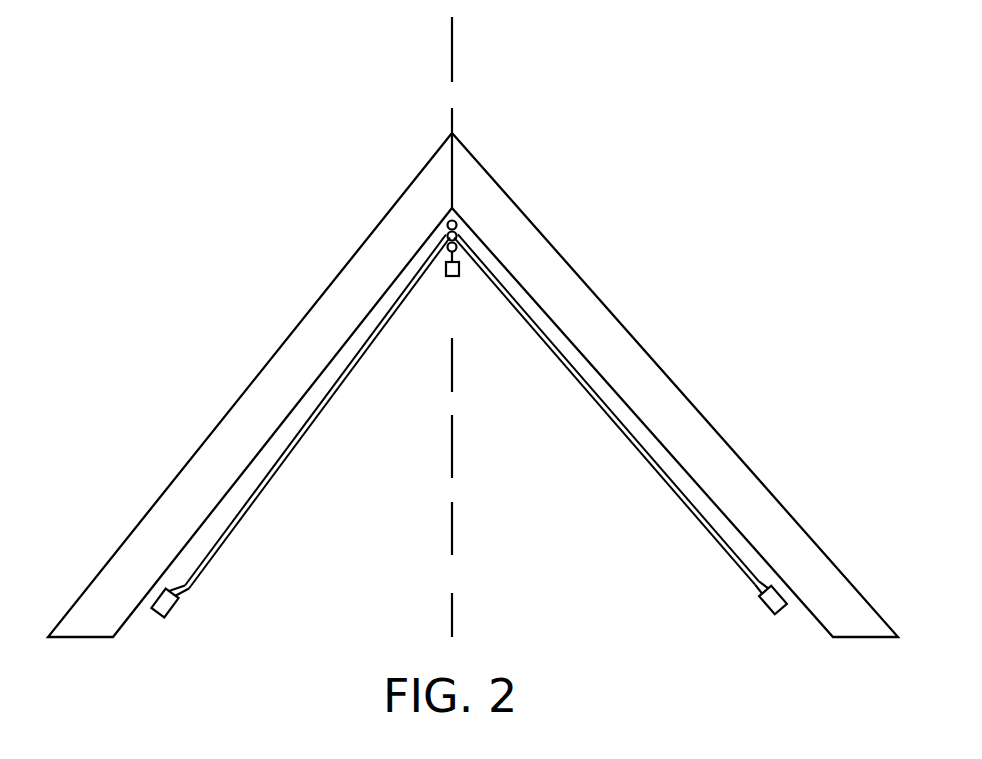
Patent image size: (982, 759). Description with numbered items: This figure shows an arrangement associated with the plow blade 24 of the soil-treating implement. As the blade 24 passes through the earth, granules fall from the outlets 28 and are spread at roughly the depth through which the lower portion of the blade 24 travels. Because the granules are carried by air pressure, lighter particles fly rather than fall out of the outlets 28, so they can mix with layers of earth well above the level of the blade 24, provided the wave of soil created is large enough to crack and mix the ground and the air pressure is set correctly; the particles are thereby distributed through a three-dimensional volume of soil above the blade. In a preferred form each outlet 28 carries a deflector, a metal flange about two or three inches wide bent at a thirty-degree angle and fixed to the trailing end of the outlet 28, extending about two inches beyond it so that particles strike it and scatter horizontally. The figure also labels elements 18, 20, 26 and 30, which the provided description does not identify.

The connecting rings 18 is at (455, 221).
The roof ridge apex 20 is at (452, 134).
The blade 24 is at (241, 466).
The support cables 26 is at (336, 373).
The outlet 28 is at (452, 277).
The vertical center plane line 30 is at (452, 452).